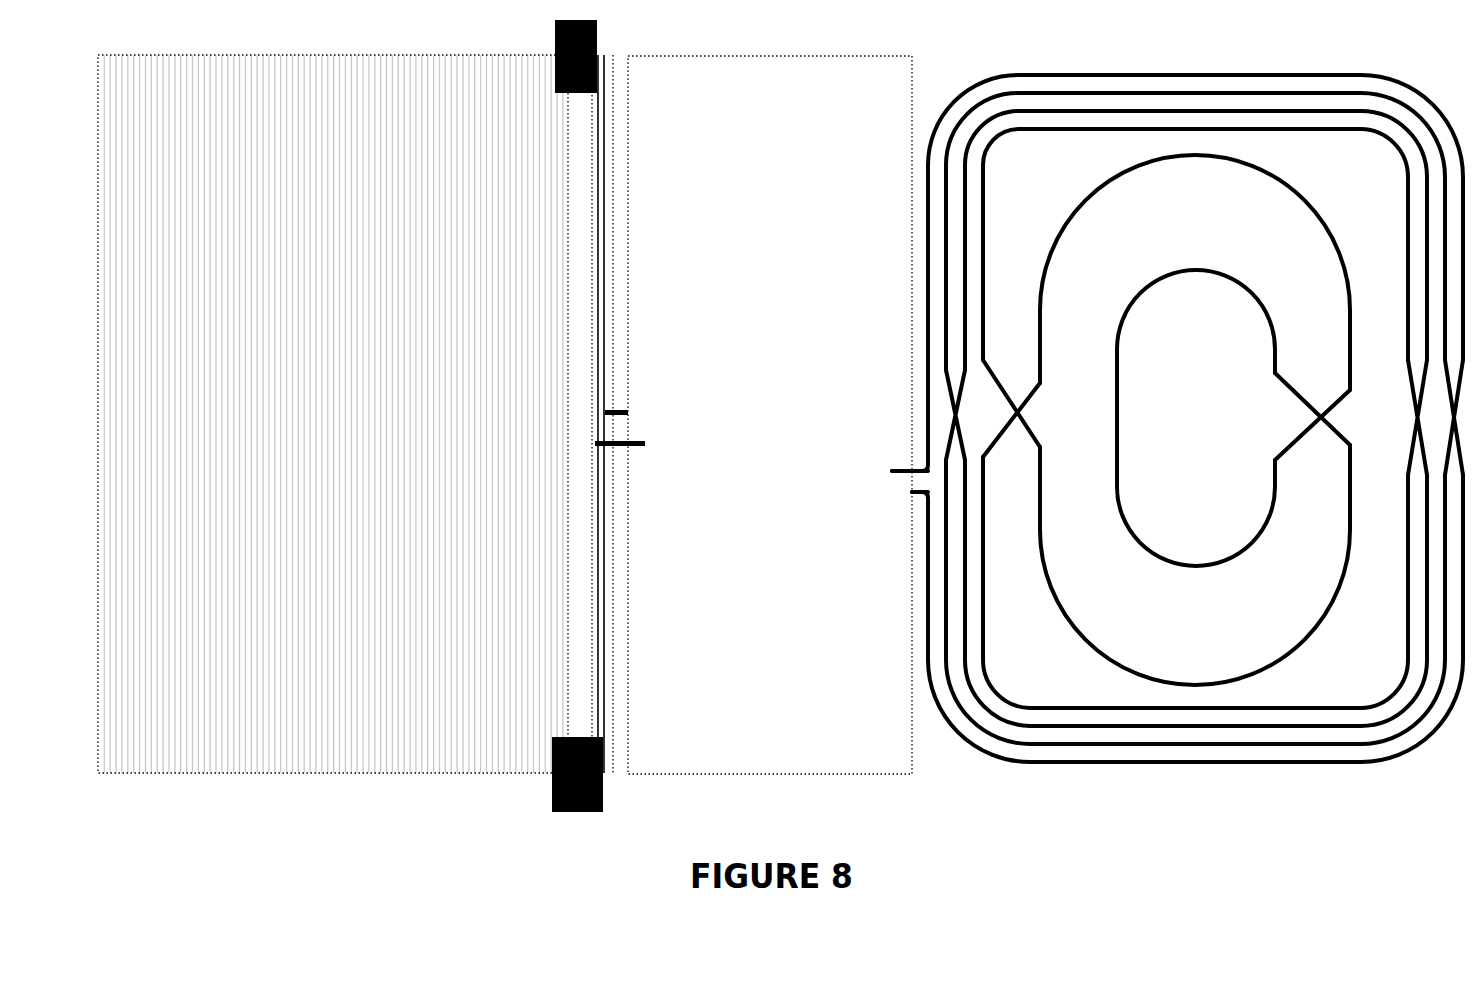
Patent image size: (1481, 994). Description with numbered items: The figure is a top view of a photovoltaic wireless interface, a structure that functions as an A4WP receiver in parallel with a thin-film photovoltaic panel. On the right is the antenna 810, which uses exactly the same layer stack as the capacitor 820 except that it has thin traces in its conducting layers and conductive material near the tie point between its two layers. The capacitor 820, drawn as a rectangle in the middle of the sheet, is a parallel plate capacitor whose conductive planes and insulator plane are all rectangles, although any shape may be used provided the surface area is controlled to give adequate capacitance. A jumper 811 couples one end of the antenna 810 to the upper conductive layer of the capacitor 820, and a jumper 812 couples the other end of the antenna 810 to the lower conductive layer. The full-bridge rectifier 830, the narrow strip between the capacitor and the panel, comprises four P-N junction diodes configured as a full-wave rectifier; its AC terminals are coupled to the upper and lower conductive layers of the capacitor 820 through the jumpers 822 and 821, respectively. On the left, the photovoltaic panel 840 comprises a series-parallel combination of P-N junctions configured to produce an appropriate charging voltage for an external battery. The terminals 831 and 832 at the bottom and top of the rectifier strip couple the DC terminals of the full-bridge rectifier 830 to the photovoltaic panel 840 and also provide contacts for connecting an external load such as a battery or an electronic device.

The antenna 810 is at (1185, 800).
The jumper 811 is at (901, 445).
The jumper 812 is at (883, 508).
The capacitor 820 is at (771, 800).
The jumper 821 is at (655, 412).
The jumper 822 is at (672, 443).
The full-bridge rectifier 830 is at (633, 298).
The terminal 831 is at (530, 798).
The terminal 832 is at (623, 55).
The photovoltaic panel 840 is at (333, 800).